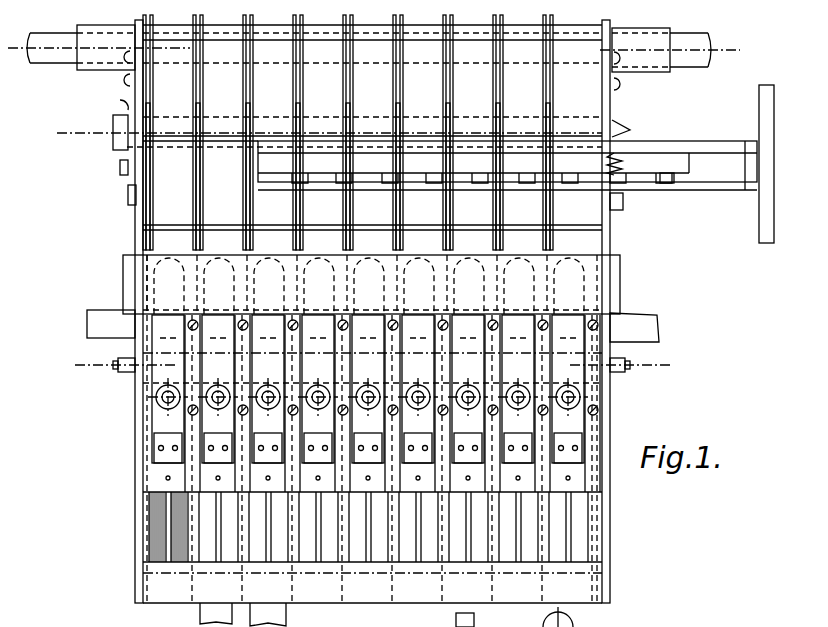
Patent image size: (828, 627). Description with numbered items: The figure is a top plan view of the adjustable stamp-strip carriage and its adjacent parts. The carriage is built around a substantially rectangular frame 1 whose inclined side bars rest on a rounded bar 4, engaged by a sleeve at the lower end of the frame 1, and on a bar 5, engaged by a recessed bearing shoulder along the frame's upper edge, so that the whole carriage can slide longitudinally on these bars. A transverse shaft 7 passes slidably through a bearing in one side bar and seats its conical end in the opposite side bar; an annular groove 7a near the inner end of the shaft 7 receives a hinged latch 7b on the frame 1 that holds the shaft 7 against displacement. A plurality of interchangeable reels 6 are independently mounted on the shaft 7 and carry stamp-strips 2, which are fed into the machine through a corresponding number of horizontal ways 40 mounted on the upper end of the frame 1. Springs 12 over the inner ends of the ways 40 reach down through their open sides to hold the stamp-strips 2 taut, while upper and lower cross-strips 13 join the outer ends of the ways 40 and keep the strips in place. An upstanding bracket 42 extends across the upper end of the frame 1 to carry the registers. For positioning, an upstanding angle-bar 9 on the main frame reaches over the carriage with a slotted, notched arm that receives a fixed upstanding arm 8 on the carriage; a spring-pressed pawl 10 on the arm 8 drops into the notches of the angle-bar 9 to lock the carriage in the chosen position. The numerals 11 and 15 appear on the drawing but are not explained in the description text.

The frame 1 is at (610, 244).
The stamp-strips 2 is at (294, 616).
The bar 4 is at (62, 57).
The bar 5 is at (660, 327).
The reels 6 is at (152, 22).
The transverse shaft 7 is at (117, 142).
The annular groove 7a is at (113, 125).
The hinged latch 7b is at (355, 73).
The upstanding arm 8 is at (620, 203).
The angle-bar 9 is at (684, 144).
The spring-pressed pawl 10 is at (625, 171).
The notch 11 is at (668, 183).
The springs 12 is at (374, 459).
The cross-strips 13 is at (168, 505).
The lever plate 15 is at (762, 236).
The ways 40 is at (205, 539).
The upstanding bracket 42 is at (123, 272).